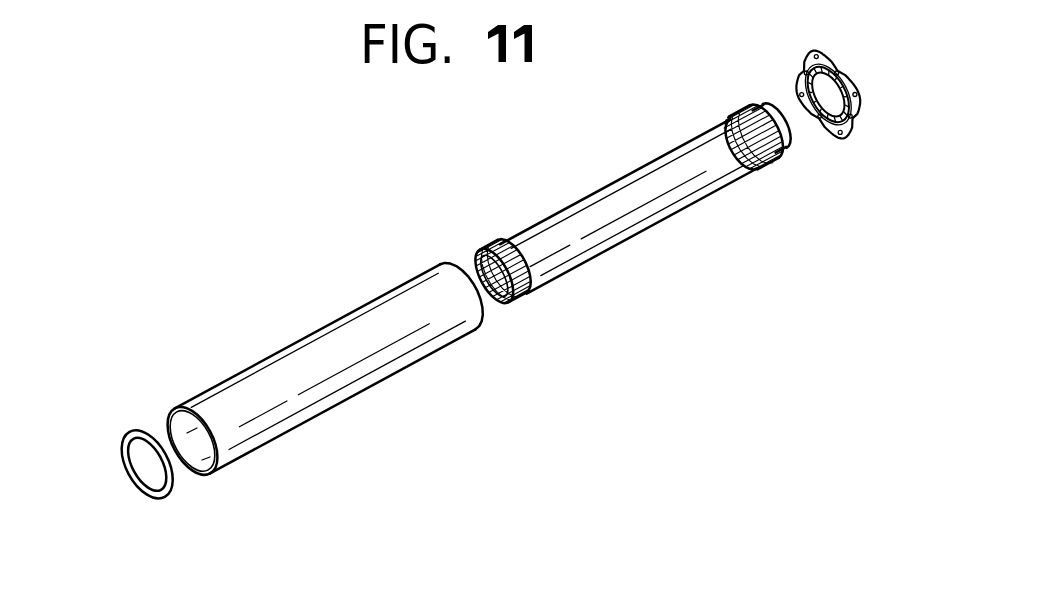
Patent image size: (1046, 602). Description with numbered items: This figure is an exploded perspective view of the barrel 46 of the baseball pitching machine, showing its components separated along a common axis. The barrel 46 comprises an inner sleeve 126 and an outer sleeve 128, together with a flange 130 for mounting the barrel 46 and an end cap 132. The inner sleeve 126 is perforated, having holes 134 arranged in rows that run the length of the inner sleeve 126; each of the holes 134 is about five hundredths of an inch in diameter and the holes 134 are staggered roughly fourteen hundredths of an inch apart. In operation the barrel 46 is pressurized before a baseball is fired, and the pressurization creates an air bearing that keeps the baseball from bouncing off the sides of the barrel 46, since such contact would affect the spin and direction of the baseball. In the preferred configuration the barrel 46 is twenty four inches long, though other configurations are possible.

The barrel 46 is at (185, 201).
The inner sleeve 126 is at (673, 212).
The outer sleeve 128 is at (261, 357).
The flange 130 is at (862, 95).
The end cap 132 is at (122, 437).
The holes 134 is at (492, 245).